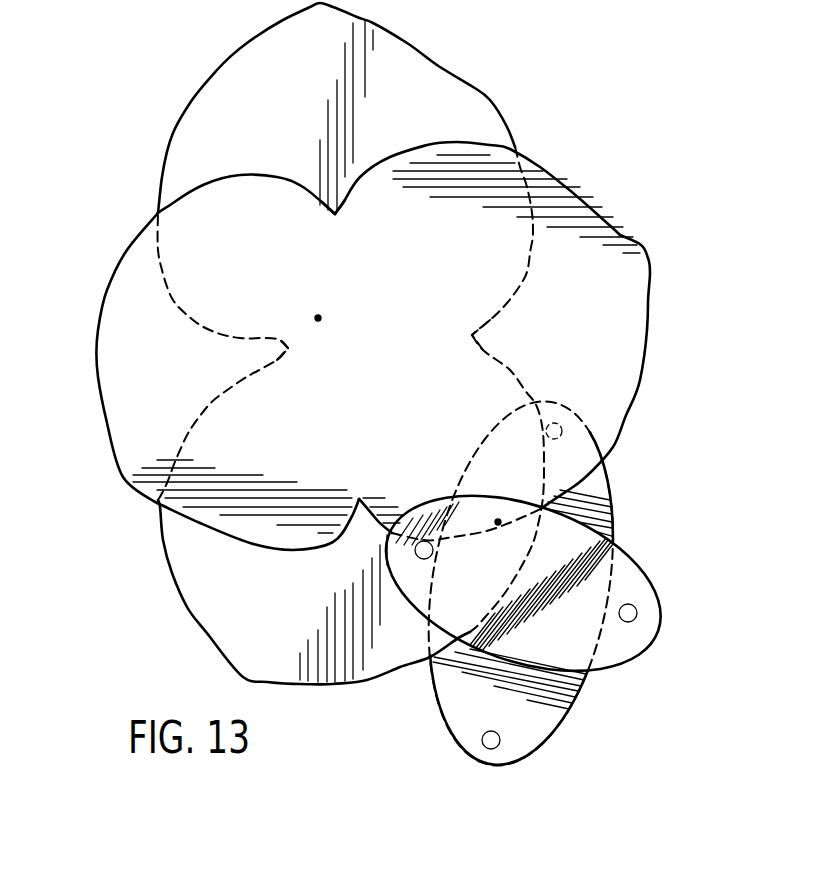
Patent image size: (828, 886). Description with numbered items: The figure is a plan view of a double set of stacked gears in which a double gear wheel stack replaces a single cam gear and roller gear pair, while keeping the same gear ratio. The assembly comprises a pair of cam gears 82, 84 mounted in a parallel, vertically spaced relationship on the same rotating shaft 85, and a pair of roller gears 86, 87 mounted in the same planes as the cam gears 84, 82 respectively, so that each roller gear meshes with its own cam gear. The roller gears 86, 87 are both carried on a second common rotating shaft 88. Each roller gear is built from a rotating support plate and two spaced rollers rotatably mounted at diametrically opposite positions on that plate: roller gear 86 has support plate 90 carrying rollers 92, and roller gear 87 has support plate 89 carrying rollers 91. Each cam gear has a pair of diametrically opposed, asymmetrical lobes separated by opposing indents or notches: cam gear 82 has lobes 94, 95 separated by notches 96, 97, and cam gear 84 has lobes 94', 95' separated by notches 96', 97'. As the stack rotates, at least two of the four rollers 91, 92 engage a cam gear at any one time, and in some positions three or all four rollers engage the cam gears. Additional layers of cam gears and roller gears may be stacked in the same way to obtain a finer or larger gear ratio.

The cam gear 82 is at (384, 355).
The cam gear 84 is at (345, 343).
The rotating shaft 85 is at (321, 316).
The roller gear 86 is at (549, 568).
The roller gear 87 is at (516, 583).
The rotating shaft 88 is at (497, 525).
The rotating support plate 89 is at (637, 578).
The rotating support plate 90 is at (567, 712).
The rollers 91 is at (417, 552).
The rollers 92 is at (557, 422).
The asymmetrical lobe 94 is at (635, 371).
The asymmetrical lobe 94' is at (325, 107).
The asymmetrical lobe 95 is at (99, 358).
The asymmetrical lobe 95' is at (297, 592).
The indent or notch 96 is at (306, 175).
The indent or notch 96' is at (519, 325).
The indent or notch 97 is at (361, 536).
The indent or notch 97' is at (233, 359).